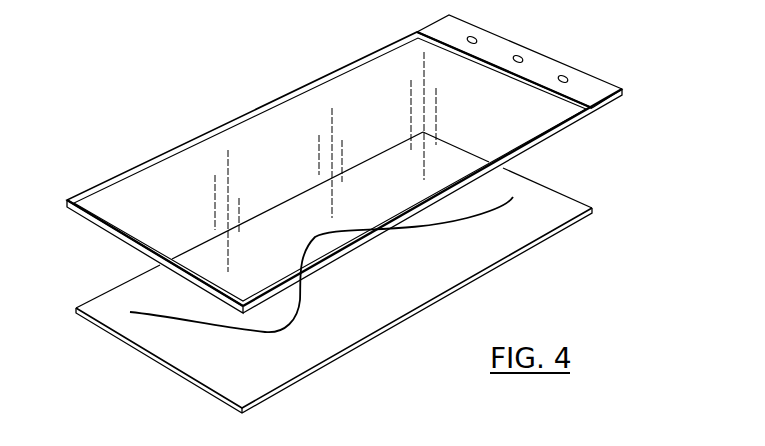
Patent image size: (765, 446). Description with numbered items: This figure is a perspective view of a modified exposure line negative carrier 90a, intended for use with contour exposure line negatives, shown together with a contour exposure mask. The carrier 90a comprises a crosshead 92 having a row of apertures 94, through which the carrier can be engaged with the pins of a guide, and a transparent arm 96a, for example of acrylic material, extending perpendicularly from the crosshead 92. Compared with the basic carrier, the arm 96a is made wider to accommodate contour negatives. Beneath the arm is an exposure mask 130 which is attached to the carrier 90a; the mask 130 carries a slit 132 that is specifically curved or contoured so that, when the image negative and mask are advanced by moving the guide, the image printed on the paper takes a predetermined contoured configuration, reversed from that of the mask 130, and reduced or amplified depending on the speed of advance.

The modified carrier 90a is at (288, 90).
The crosshead 92 is at (594, 88).
The apertures 94 is at (523, 56).
The wider arm 96a is at (543, 118).
The exposure mask 130 is at (387, 303).
The slit 132 is at (468, 229).